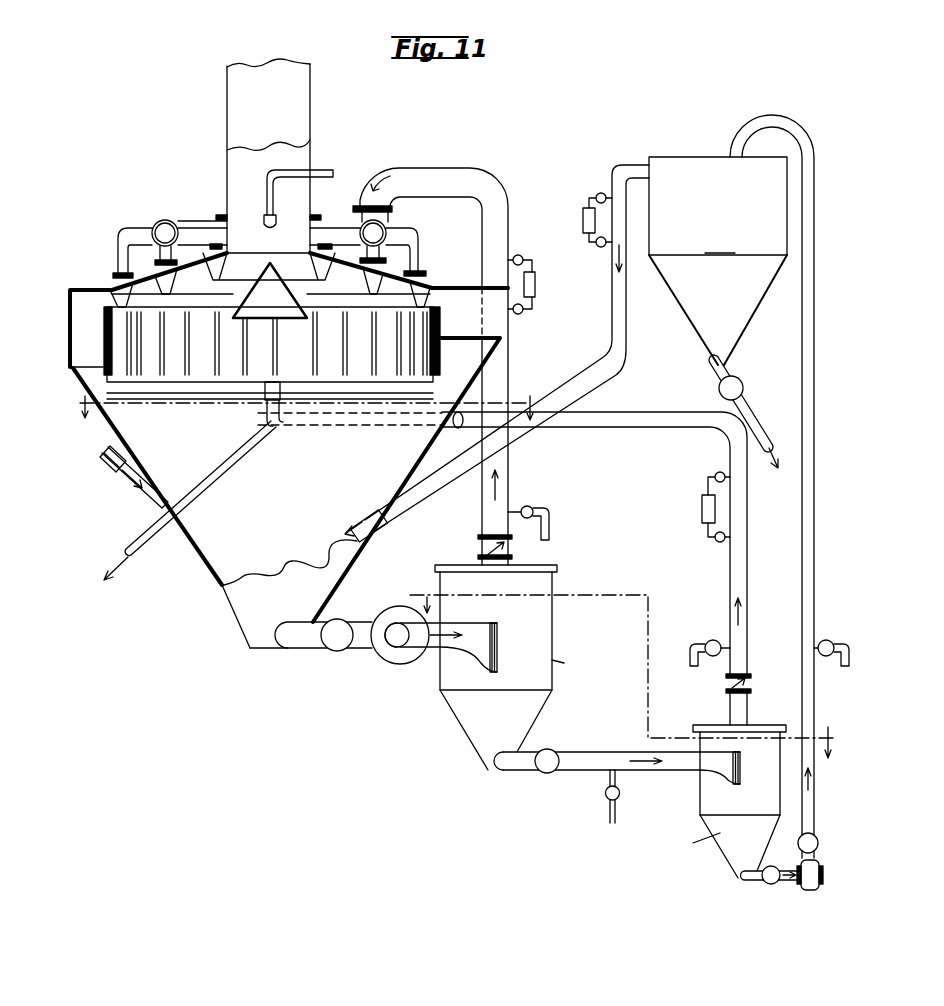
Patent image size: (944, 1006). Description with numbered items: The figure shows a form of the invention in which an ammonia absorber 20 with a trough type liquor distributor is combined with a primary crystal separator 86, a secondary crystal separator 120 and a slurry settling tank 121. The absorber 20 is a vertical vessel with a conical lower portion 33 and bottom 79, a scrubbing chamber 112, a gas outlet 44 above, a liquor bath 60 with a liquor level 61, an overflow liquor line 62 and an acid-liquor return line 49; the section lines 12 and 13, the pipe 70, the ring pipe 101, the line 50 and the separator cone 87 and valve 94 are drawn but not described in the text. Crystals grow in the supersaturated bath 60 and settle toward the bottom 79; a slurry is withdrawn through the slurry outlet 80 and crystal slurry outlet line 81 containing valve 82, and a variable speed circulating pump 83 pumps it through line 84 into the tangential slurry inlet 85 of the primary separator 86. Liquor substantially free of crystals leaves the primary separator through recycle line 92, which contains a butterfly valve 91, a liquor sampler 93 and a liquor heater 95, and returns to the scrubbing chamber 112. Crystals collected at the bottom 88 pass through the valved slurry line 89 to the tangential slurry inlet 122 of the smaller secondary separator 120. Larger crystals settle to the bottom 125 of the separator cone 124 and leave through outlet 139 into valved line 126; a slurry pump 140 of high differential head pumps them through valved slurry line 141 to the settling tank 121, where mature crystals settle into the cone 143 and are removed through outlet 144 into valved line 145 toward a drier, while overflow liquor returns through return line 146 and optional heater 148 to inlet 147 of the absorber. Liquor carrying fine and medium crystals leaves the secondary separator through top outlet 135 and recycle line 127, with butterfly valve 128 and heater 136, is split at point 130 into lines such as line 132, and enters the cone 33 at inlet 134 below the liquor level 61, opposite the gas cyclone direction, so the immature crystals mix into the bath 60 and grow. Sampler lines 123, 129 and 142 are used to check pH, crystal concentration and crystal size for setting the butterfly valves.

The gas outlet 44 is at (310, 136).
The feed pipe 70 is at (314, 170).
The heating ring pipe 101 is at (203, 226).
The recycle line 92 is at (508, 240).
The liquor heater 95 is at (536, 287).
The ammonia absorber 20 is at (101, 442).
The scrubbing chamber 112 is at (340, 350).
The liquor level 61 is at (300, 386).
The section line 12 is at (302, 396).
The inlet 134 is at (275, 428).
The line 132 is at (380, 430).
The separation point 130 is at (457, 431).
The overflow liquor line 62 is at (137, 546).
The feed pipe 50 is at (147, 487).
The acid-liquor return line 49 is at (122, 476).
The conical lower portion 33 is at (203, 573).
The bottom of the absorber 79 is at (274, 654).
The bath 60 is at (301, 496).
The slurry outlet 80 is at (298, 652).
The valve 82 is at (334, 654).
The circulating pump 83 is at (382, 668).
The crystal slurry outlet line 81 is at (375, 615).
The crystal separator 86 is at (552, 636).
The line 84 is at (446, 629).
The slurry inlet 85 is at (482, 668).
The separator cone 87 is at (466, 750).
The butterfly valve 91 is at (478, 550).
The liquor sampler 93 is at (549, 524).
The section line 13 is at (625, 664).
The bottom of the primary separator 88 is at (490, 776).
The valved slurry line 89 is at (585, 776).
The valve 94 is at (506, 777).
The sampler line 123 is at (617, 797).
The secondary crystal separator 120 is at (700, 790).
The slurry inlet 122 is at (733, 789).
The separator cone 124 is at (716, 870).
The bottom of the separator cone 125 is at (745, 881).
The valved line 126 is at (793, 883).
The slurry pump 140 is at (806, 891).
The valved slurry line 141 is at (808, 551).
The outlet 139 is at (757, 870).
The slurry settling tank 121 is at (718, 206).
The cone 143 is at (696, 329).
The valved line 145 is at (744, 399).
The outlet 144 is at (717, 373).
The heater 148 is at (583, 214).
The return line 146 is at (612, 330).
The inlet 147 is at (360, 512).
The recycle line 127 is at (747, 586).
The butterfly valve 128 is at (748, 683).
The top outlet 135 is at (730, 706).
The heater 136 is at (702, 513).
The sampler line 129 is at (710, 641).
The sampler line 142 is at (838, 632).